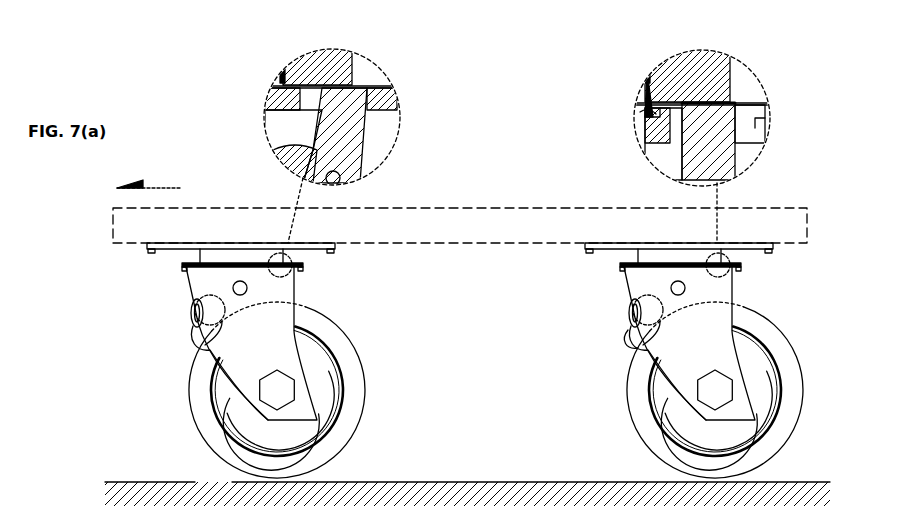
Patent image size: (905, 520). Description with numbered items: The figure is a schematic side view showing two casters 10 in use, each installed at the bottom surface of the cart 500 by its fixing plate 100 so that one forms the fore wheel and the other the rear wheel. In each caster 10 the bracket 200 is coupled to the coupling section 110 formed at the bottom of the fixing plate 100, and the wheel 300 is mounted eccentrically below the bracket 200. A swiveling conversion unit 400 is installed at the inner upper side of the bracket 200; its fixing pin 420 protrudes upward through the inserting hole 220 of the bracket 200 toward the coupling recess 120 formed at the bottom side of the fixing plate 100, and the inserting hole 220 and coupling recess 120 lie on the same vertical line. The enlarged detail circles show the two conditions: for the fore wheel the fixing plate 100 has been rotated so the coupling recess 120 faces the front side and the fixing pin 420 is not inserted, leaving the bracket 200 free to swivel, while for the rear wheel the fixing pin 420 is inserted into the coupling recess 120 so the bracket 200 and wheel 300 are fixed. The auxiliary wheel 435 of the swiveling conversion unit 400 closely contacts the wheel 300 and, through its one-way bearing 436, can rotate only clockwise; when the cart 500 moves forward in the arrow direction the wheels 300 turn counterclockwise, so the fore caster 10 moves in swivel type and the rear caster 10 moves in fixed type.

The caster 10 is at (458, 245).
The fixing plate 100 is at (167, 250).
The coupling section 110 is at (196, 256).
The coupling recess 120 is at (645, 115).
The bracket 200 is at (296, 288).
The inserting hole 220 is at (373, 90).
The wheel 300 is at (366, 386).
The swiveling conversion unit 400 is at (190, 309).
The fixing pin 420 is at (362, 128).
The auxiliary wheel 435 is at (196, 318).
The one-way bearing 436 is at (628, 330).
The cart 500 is at (504, 208).